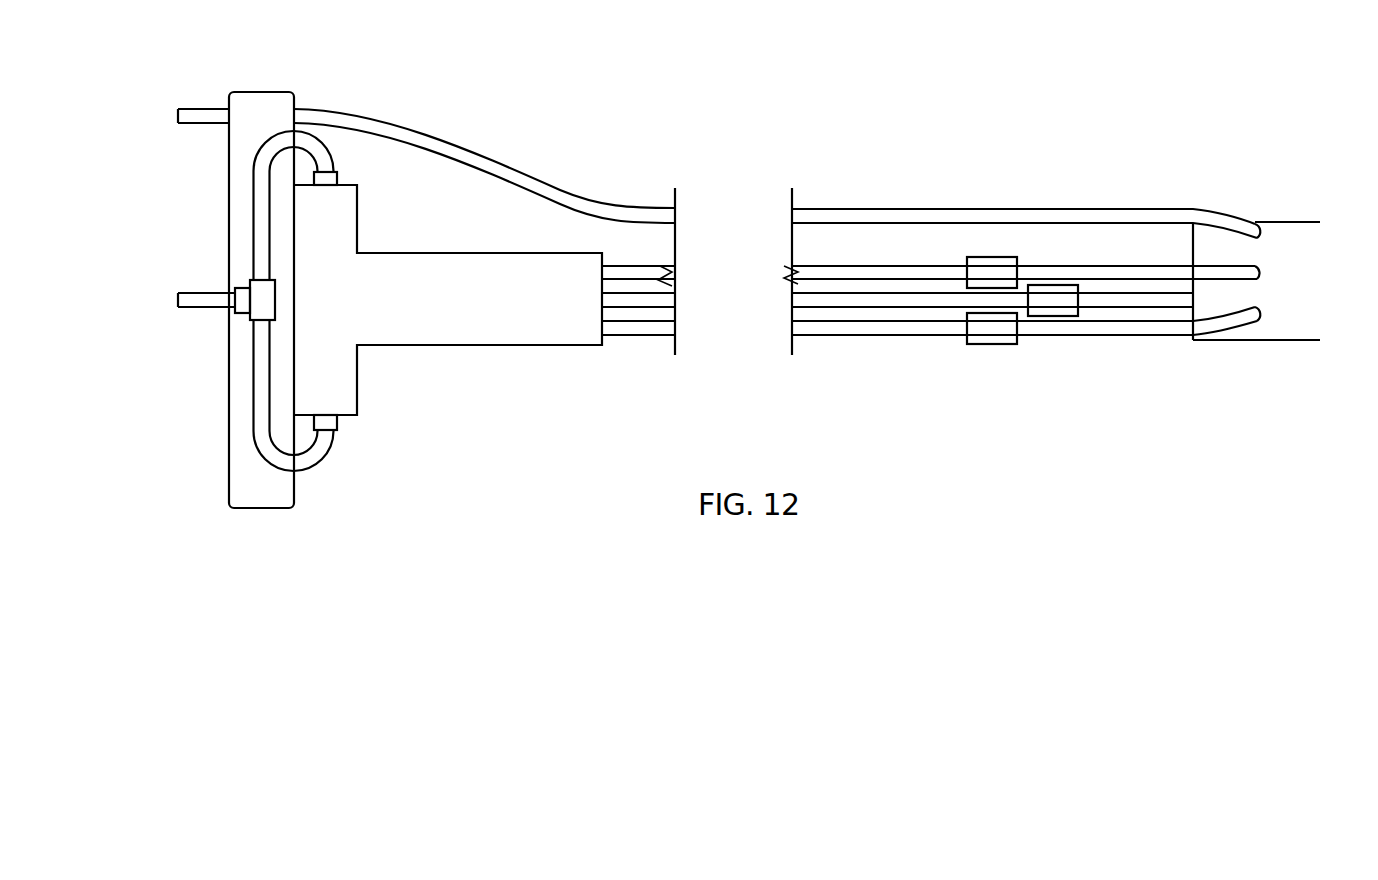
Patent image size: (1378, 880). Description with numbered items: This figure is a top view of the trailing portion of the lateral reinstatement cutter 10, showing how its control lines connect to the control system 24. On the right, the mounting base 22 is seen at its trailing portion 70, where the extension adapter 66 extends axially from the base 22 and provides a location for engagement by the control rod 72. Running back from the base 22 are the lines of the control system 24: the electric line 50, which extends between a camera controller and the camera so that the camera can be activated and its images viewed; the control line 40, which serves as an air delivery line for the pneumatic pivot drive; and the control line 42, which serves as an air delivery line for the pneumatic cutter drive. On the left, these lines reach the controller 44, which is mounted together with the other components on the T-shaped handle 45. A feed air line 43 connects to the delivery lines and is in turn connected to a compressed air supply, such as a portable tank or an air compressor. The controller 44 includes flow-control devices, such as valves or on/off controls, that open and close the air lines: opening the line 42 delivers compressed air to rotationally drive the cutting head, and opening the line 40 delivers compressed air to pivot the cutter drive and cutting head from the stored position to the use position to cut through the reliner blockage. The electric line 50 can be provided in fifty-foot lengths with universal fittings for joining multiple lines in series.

The lateral reinstatement cutter 10 is at (1097, 131).
The mounting base 22 is at (1242, 186).
The control system 24 is at (333, 87).
The control line for the pivot drive 40 is at (635, 266).
The control line for the cutter drive 42 is at (645, 336).
The feed air line 43 is at (196, 262).
The controller 44 is at (203, 333).
The T-shaped handle 45 is at (204, 501).
The electric line 50 is at (464, 122).
The extension adapter 66 is at (1135, 321).
The trailing portion 70 is at (1265, 341).
The control rod 72 is at (677, 286).